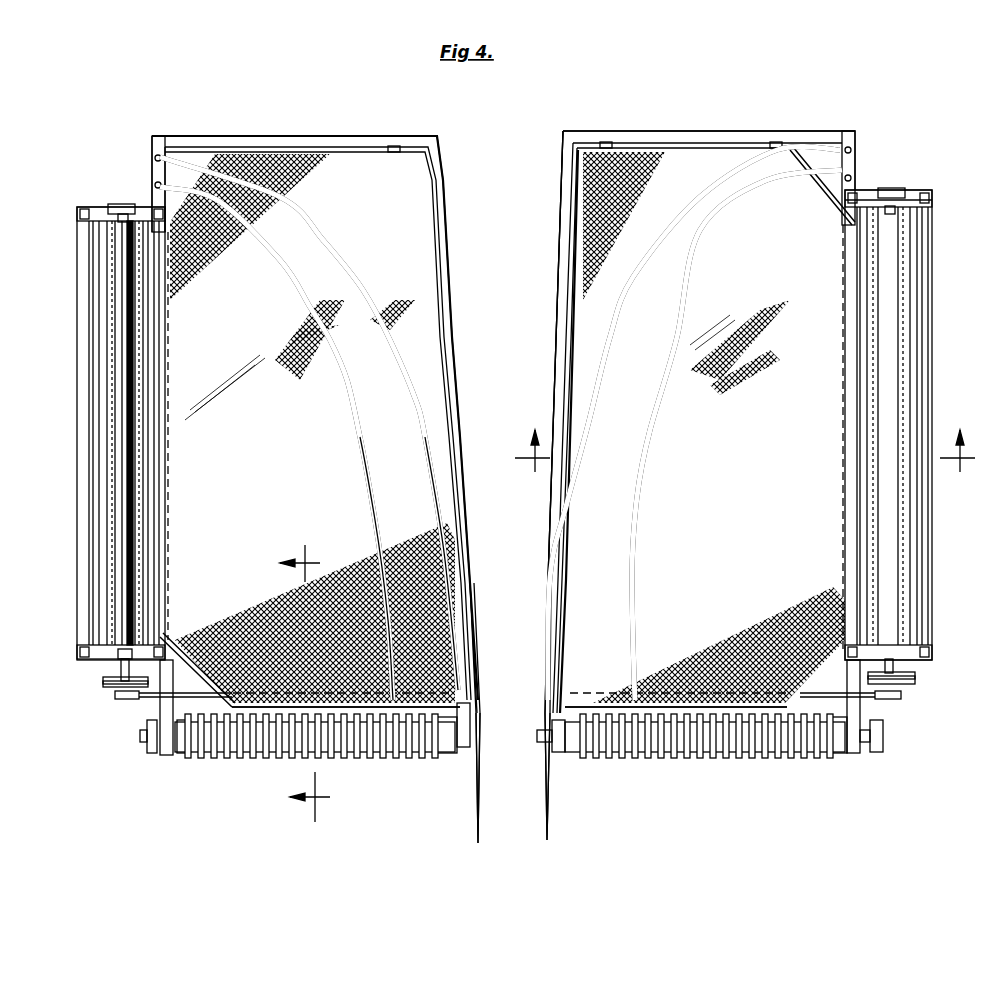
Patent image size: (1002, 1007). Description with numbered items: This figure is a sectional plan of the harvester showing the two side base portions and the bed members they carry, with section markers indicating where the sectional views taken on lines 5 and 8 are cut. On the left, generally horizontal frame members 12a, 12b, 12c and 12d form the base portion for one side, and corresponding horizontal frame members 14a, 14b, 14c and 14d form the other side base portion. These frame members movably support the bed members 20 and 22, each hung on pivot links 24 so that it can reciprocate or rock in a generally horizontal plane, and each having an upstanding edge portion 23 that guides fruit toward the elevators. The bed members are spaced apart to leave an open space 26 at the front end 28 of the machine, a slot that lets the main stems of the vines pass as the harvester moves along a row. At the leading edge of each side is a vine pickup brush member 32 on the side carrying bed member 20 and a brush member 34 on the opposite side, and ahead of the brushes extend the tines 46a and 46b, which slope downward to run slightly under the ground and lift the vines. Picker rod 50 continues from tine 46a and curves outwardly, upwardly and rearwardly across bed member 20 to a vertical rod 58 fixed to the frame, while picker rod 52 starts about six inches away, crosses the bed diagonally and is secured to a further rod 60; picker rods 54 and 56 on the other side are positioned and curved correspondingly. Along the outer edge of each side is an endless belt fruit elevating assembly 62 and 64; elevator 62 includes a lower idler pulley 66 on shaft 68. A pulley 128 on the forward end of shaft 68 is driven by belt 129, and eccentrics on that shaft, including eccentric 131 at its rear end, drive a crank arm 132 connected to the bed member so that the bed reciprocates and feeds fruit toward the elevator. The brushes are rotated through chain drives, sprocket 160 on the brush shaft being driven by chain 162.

The bed member 20 is at (315, 421).
The bed member 22 is at (700, 422).
The horizontal frame member 12a is at (152, 150).
The horizontal frame member 12b is at (258, 137).
The horizontal frame member 12c is at (445, 183).
The horizontal frame member 12d is at (160, 697).
The horizontal frame member 14a is at (858, 137).
The horizontal frame member 14b is at (730, 131).
The horizontal frame member 14c is at (562, 137).
The horizontal frame member 14d is at (583, 690).
The upstanding edge portion 23 is at (448, 260).
The pivot link 24 is at (388, 146).
The open space 26 is at (505, 730).
The front end 28 is at (448, 775).
The vine pickup roller or brush member 32 is at (230, 765).
The vine pickup roller or brush member 34 is at (690, 765).
The tine 46a is at (476, 812).
The tine 46b is at (550, 806).
The picker rod 50 is at (424, 430).
The picker rod 52 is at (352, 422).
The picker rod 54 is at (592, 421).
The picker rod 56 is at (640, 577).
The vertical rod 58 is at (167, 155).
The rod 60 is at (152, 179).
The fruit elevating assembly 62 is at (72, 313).
The fruit elevating assembly 64 is at (945, 264).
The lower idler pulley 66 is at (115, 421).
The shaft 68 is at (121, 671).
The pulley 128 is at (915, 677).
The belt 129 is at (106, 685).
The eccentric 131 is at (106, 205).
The crank arm 132 is at (114, 699).
The sprocket 160 is at (884, 733).
The chain 162 is at (875, 743).
The section line 5 is at (305, 683).
The section line 8 is at (745, 455).